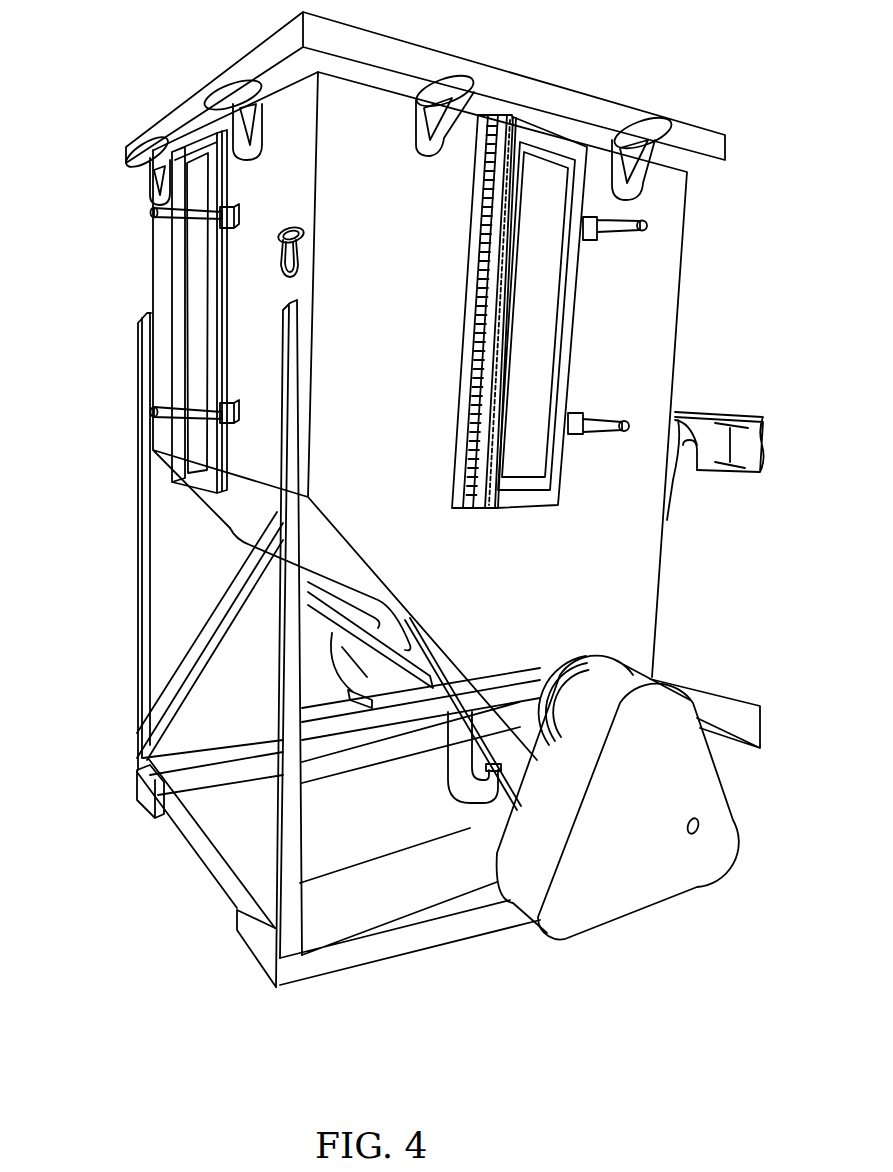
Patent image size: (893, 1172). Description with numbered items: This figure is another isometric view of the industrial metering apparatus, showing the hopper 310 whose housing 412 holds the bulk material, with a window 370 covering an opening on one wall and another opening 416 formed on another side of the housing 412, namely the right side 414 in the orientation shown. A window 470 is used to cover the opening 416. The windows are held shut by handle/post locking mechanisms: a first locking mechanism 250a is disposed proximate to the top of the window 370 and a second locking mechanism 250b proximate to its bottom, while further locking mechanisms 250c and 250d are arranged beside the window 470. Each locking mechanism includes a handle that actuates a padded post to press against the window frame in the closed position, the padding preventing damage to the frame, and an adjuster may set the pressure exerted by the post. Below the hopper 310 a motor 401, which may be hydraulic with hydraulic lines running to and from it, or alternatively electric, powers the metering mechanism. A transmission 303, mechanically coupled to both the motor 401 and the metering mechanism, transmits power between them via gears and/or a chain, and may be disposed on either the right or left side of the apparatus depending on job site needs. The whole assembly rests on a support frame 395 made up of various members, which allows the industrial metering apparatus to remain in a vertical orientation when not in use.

The first locking mechanism 250a is at (140, 200).
The second locking mechanism 250b is at (132, 395).
The handle/post locking mechanism 250c is at (655, 217).
The handle/post locking mechanism 250d is at (652, 408).
The transmission 303 is at (648, 877).
The hopper 310 is at (125, 338).
The window 370 is at (240, 190).
The support frame 395 is at (380, 937).
The motor 401 is at (488, 805).
The housing 412 is at (668, 332).
The right side 414 is at (653, 571).
The opening 416 is at (523, 253).
The window 470 is at (592, 318).